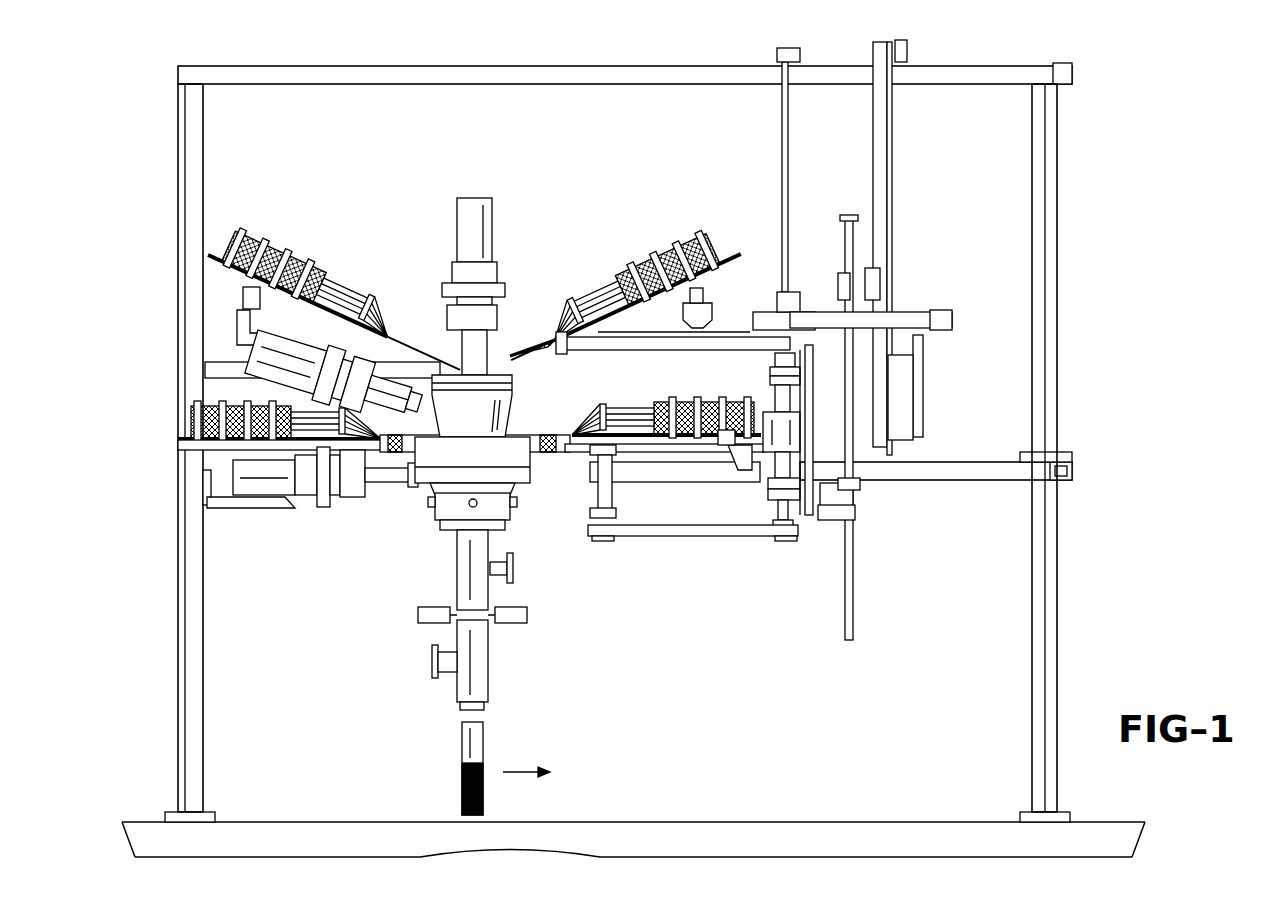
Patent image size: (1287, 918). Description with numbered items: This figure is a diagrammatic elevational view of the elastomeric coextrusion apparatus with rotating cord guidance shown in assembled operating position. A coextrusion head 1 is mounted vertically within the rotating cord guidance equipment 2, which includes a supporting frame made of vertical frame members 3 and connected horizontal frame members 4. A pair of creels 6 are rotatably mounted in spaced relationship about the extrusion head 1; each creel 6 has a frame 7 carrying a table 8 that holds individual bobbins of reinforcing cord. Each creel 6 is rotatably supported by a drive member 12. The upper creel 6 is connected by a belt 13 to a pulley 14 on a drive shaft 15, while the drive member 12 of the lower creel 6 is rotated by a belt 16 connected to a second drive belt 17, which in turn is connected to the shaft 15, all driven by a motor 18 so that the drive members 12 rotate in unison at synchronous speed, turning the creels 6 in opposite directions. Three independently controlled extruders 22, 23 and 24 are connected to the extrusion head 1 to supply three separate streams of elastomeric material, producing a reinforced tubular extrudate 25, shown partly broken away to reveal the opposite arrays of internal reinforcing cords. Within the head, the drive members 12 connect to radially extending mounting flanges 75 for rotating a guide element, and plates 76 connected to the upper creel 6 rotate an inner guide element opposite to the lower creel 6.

The coextrusion head 1 is at (438, 530).
The rotating cord guidance equipment 2 is at (290, 240).
The vertical frame members 3 is at (1052, 418).
The horizontal frame members 4 is at (625, 78).
The creel 6 is at (740, 245).
The creel frame 7 is at (137, 48).
The table 8 is at (706, 265).
The drive member 12 is at (560, 348).
The belt 13 is at (620, 350).
The pulley 14 is at (762, 350).
The drive shaft 15 is at (785, 157).
The belt 16 is at (615, 452).
The second drive belt 17 is at (692, 537).
The motor 18 is at (790, 435).
The extruder 22 is at (474, 218).
The extruder 23 is at (258, 356).
The extruder 24 is at (252, 478).
The reinforced tubular extrudate 25 is at (475, 740).
The mounting flanges 75 is at (530, 440).
The plates 76 is at (520, 360).